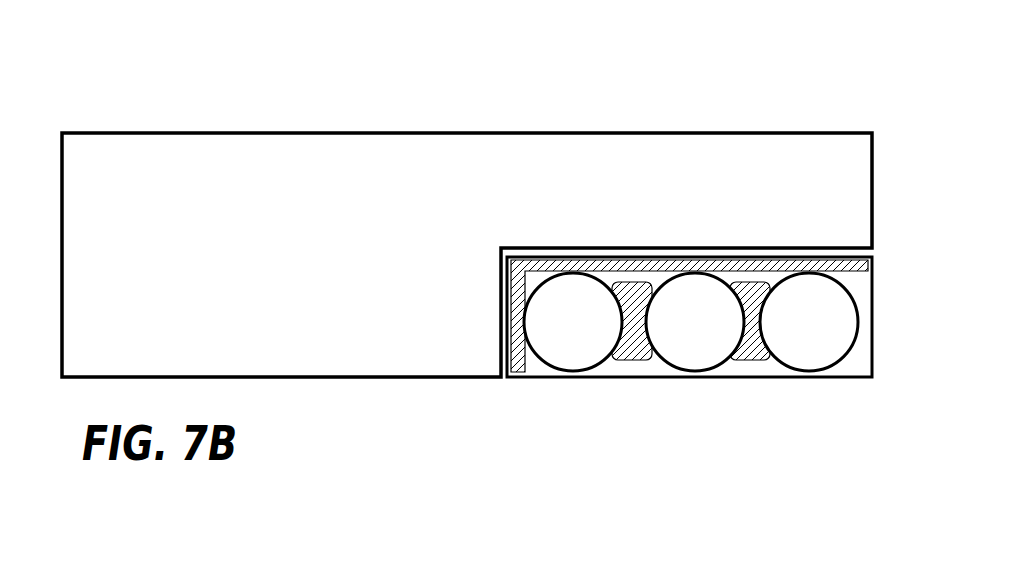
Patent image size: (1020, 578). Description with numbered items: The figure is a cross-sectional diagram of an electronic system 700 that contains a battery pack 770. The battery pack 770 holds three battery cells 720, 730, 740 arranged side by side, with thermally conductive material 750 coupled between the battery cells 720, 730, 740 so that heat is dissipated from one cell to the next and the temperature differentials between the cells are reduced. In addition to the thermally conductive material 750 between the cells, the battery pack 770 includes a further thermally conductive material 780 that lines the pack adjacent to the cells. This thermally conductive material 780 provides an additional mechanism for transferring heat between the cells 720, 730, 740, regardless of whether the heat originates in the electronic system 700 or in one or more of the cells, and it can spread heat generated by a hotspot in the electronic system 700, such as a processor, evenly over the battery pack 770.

The electronic system 700 is at (467, 193).
The battery cell 720 is at (558, 345).
The battery cell 730 is at (680, 345).
The battery cell 740 is at (794, 345).
The thermally conductive material 750 is at (742, 360).
The battery pack 770 is at (707, 362).
The thermally conductive material 780 is at (554, 349).